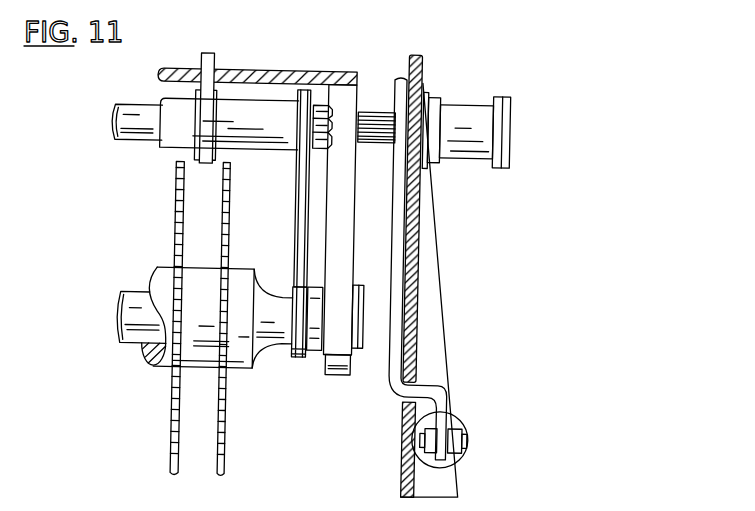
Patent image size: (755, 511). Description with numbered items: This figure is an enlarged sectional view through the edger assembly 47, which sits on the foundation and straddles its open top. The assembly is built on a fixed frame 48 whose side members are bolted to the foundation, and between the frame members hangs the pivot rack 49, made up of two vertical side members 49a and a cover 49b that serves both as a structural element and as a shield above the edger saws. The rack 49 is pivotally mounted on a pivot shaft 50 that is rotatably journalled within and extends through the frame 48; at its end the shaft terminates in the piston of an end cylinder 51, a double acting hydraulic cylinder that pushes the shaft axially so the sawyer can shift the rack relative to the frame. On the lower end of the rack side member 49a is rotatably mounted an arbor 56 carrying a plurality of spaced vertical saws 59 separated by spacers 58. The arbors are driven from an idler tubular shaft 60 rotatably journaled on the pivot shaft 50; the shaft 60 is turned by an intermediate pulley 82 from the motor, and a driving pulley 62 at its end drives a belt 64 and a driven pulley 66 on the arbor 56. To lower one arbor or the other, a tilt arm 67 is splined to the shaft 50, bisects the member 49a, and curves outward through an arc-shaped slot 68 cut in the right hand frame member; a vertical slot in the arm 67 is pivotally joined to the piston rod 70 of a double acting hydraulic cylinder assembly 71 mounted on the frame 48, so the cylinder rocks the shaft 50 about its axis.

The intermediate pulley 82 is at (194, 97).
The idler tubular shaft 60 is at (245, 154).
The driving pulley 62 is at (294, 165).
The belt 64 is at (294, 210).
The cover 49b is at (353, 80).
The pivot shaft 50 is at (383, 146).
The pivot rack 49 is at (355, 215).
The vertical side member 49a is at (345, 377).
The end cylinder 51 is at (504, 146).
The spacer 58 is at (155, 277).
The arbor 56 is at (124, 319).
The driven pulley 66 is at (294, 291).
The edger assembly 47 is at (258, 371).
The fixed frame 48 is at (442, 299).
The tilt arm 67 is at (447, 405).
The slot 68 is at (410, 409).
The double acting hydraulic cylinder assembly 71 is at (471, 436).
The piston rod 70 is at (456, 449).
The vertical saws 59 is at (209, 490).